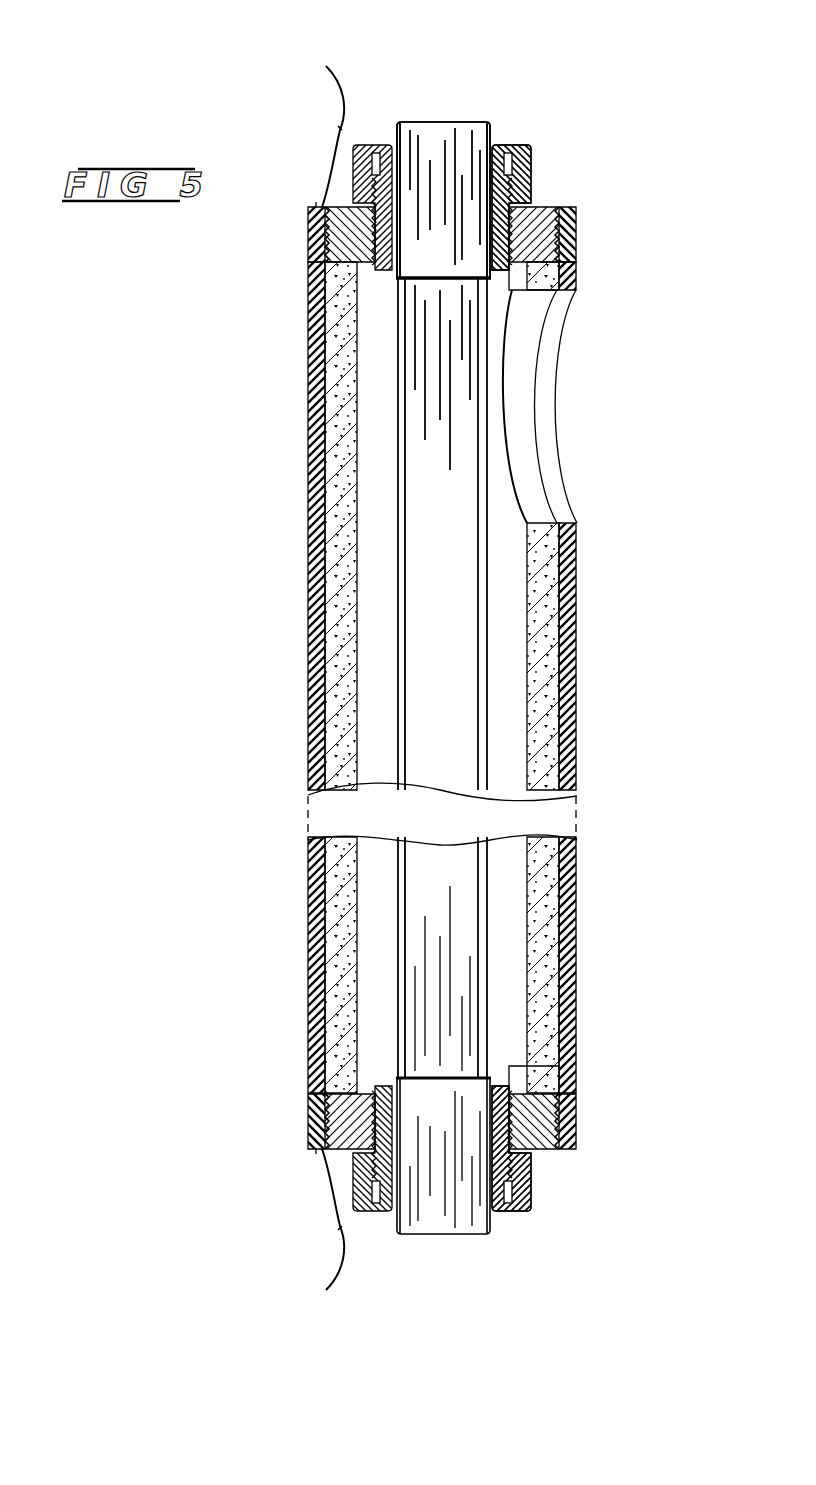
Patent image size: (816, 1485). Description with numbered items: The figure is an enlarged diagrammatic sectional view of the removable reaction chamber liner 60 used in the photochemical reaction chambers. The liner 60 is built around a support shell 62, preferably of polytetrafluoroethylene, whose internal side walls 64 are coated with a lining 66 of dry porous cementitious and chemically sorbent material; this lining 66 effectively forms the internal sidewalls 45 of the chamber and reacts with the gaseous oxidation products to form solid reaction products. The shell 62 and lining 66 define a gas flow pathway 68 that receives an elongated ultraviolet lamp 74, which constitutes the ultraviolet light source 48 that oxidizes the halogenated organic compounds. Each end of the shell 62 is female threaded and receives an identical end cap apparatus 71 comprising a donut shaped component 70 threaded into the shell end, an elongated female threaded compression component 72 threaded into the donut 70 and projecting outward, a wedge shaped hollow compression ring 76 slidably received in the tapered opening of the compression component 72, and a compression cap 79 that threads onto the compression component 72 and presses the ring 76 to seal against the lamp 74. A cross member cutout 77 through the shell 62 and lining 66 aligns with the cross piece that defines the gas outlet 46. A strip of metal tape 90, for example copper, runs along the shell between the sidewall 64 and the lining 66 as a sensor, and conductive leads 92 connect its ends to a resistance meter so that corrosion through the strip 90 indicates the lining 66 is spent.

The internal sidewalls 45 is at (357, 602).
The gas outlet 46 is at (572, 375).
The ultraviolet light source 48 is at (453, 120).
The removable reaction chamber liner 60 is at (316, 206).
The support shell 62 is at (318, 254).
The internal side walls 64 is at (345, 490).
The lining 66 is at (326, 318).
The pathway 68 is at (368, 653).
The donut shaped component 70 is at (522, 268).
The end cap apparatus 71 is at (543, 158).
The compression component 72 is at (535, 207).
The ultraviolet lamp 74 is at (432, 132).
The compression ring 76 is at (495, 150).
The cross member cutout 77 is at (548, 338).
The compression cap 79 is at (358, 146).
The metal tape 90 is at (318, 382).
The lead 92 is at (318, 1062).